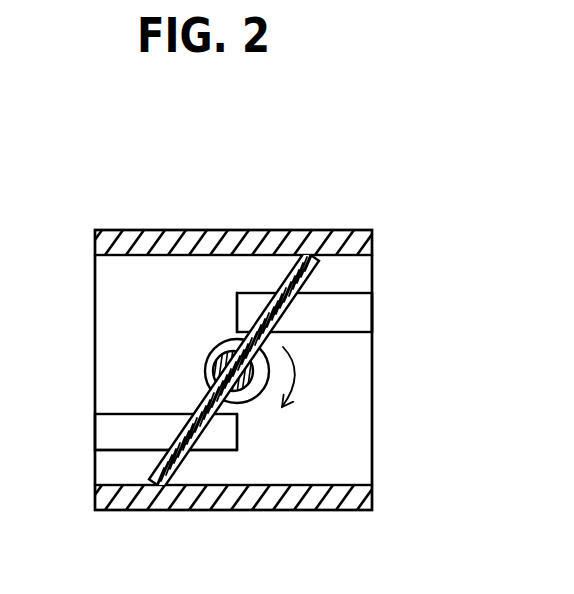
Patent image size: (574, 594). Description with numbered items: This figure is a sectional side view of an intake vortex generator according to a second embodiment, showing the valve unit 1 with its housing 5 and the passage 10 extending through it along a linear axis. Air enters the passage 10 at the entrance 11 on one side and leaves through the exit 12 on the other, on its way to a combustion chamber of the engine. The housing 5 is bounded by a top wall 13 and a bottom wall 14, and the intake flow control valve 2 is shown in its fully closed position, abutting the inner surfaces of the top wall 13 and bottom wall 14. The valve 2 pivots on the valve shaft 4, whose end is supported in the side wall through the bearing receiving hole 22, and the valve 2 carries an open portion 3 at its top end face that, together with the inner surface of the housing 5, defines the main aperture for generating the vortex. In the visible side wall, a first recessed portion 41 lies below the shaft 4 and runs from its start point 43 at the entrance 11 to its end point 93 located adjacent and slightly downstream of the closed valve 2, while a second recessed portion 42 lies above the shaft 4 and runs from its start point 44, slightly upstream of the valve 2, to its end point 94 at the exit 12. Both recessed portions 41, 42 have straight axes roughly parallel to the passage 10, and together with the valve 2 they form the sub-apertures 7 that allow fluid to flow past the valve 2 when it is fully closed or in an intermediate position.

The valve unit 1 is at (82, 186).
The intake flow control valve 2 is at (245, 300).
The open portion 3 is at (314, 262).
The valve shaft 4 is at (212, 360).
The housing 5 is at (142, 229).
The sub-apertures 7 is at (366, 310).
The passage 10 is at (318, 452).
The entrance 11 is at (95, 350).
The exit 12 is at (372, 404).
The top wall 13 is at (229, 230).
The bottom wall 14 is at (231, 510).
The bearing receiving hole 22 is at (256, 400).
The first recessed portion 41 is at (141, 416).
The second recessed portion 42 is at (323, 293).
The start point 43 is at (98, 451).
The start point 44 is at (253, 293).
The end point 93 is at (238, 432).
The end point 94 is at (372, 295).